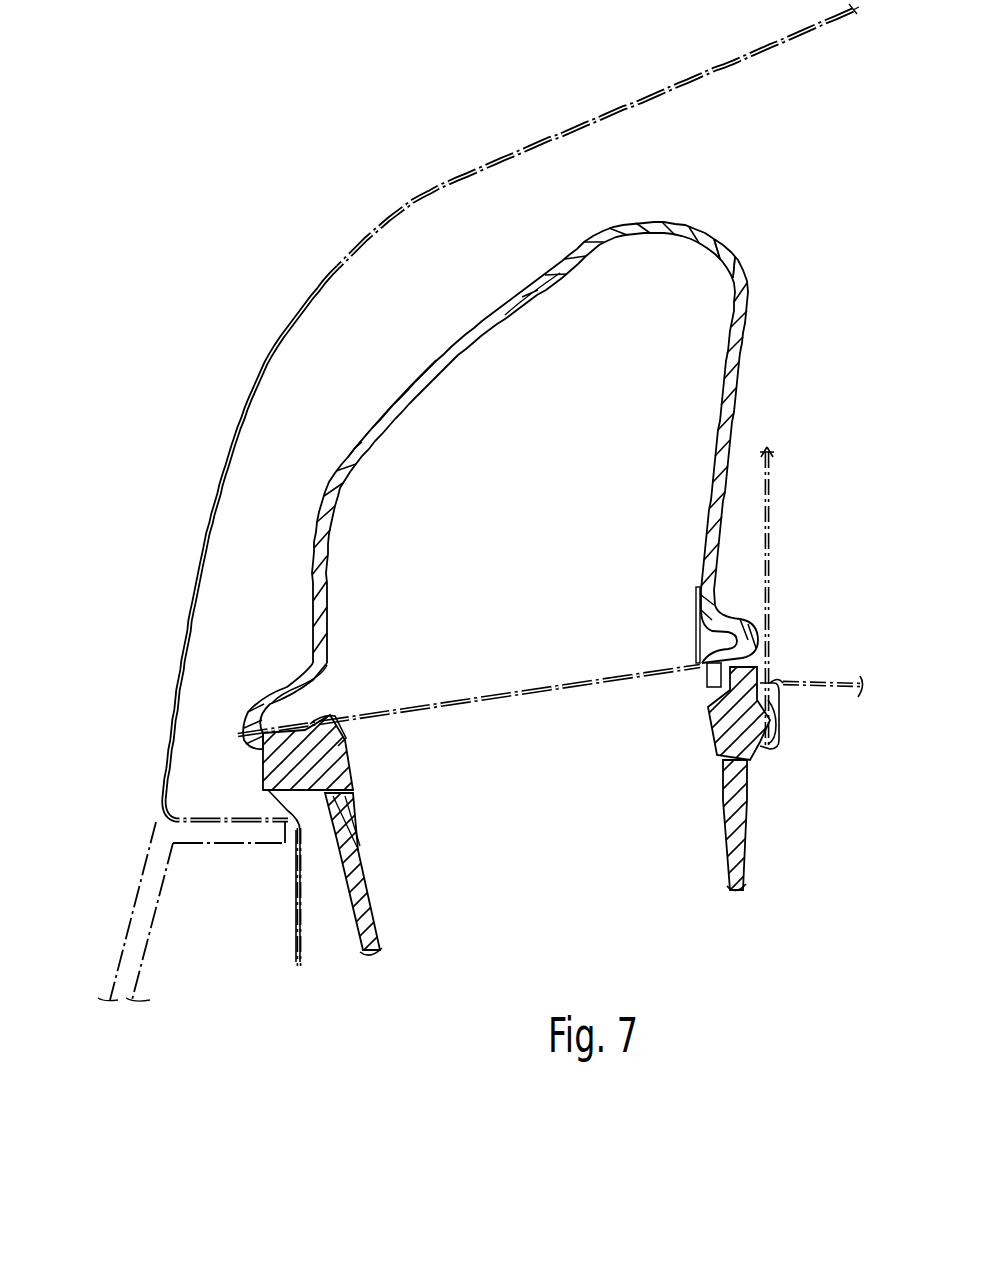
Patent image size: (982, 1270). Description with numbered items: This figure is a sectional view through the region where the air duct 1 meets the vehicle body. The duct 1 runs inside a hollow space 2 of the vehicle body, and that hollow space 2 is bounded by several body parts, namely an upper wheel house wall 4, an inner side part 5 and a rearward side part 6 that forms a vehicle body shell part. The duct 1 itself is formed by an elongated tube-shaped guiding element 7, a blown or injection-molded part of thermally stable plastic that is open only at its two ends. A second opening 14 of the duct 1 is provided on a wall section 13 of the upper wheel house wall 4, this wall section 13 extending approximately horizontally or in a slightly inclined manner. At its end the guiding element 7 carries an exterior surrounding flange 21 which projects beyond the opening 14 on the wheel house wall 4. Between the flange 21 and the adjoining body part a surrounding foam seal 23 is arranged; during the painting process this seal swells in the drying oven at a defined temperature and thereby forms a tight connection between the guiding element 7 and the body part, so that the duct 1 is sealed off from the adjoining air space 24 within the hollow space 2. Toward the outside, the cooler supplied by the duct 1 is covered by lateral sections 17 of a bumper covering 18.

The duct 1 is at (555, 264).
The hollow space 2 is at (564, 460).
The upper wheel house wall 4 is at (300, 912).
The inner side part 5 is at (771, 496).
The rearward side part 6 is at (397, 213).
The tube-shaped guiding element 7 is at (720, 253).
The wall section 13 is at (366, 712).
The second opening 14 is at (487, 702).
The lateral sections 17 is at (140, 907).
The bumper covering 18 is at (145, 972).
The flange 21 is at (298, 717).
The foam seal 23 is at (245, 734).
The air space 24 is at (461, 258).